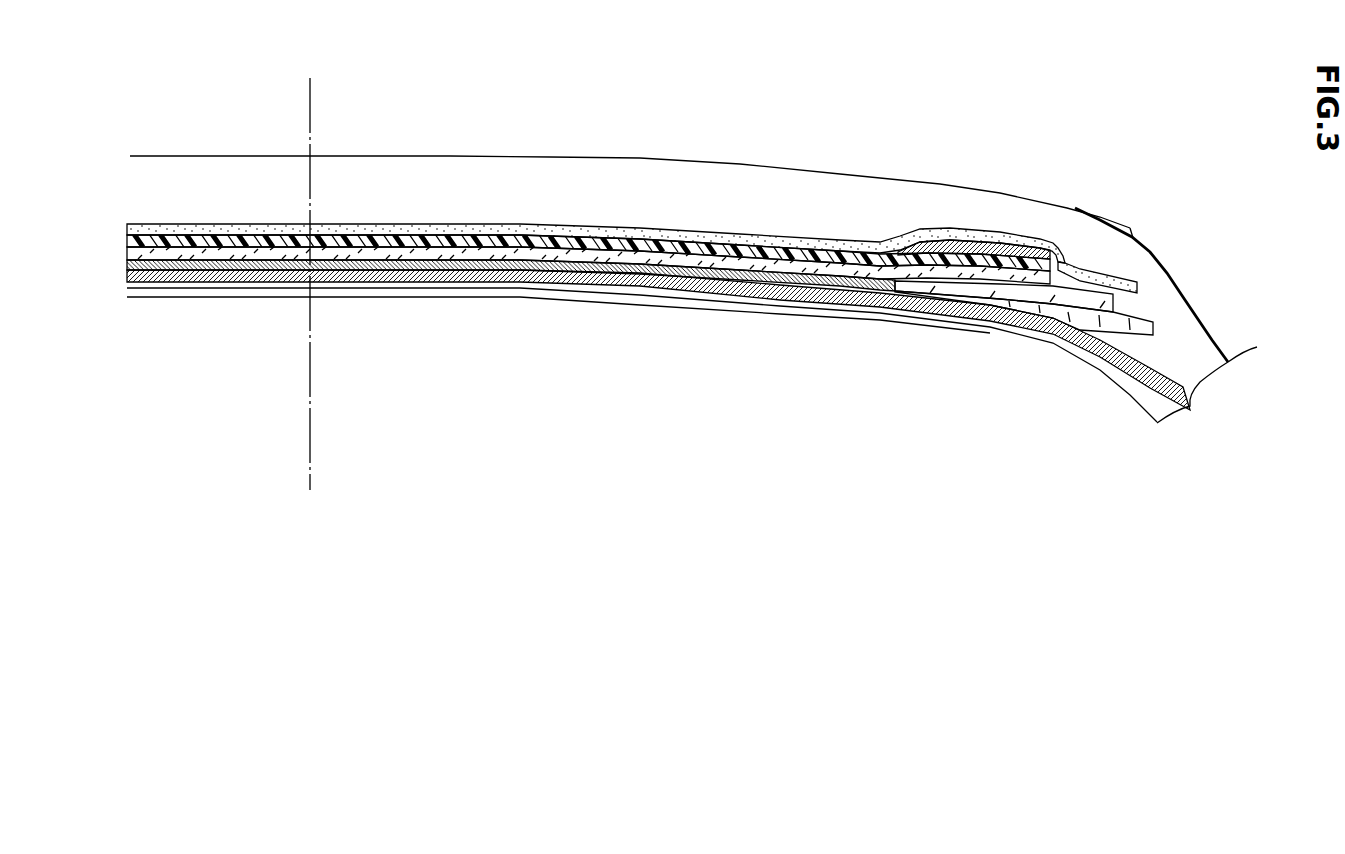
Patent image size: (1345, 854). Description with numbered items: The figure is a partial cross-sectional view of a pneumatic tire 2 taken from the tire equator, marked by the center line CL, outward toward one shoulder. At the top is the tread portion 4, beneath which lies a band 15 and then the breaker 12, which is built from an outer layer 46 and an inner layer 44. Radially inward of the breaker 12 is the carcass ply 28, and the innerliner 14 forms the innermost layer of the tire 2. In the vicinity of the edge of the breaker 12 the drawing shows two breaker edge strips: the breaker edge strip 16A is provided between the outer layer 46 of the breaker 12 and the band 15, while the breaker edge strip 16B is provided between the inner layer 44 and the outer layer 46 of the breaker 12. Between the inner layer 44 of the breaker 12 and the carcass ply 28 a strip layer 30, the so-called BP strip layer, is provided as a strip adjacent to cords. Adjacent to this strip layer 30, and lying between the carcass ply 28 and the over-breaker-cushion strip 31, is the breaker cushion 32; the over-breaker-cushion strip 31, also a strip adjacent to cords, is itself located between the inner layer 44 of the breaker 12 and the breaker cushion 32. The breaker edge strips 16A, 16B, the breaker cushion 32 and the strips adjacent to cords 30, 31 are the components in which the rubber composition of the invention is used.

The pneumatic tire 2 is at (1235, 147).
The tread portion 4 is at (521, 145).
The breaker 12 is at (588, 172).
The innerliner 14 is at (980, 322).
The band 15 is at (714, 233).
The breaker edge strip 16A is at (998, 250).
The breaker edge strip 16B is at (1066, 272).
The carcass ply 28 is at (830, 284).
The strip layer between breaker and ply 30 is at (794, 276).
The over-breaker-cushion strip 31 is at (1140, 307).
The breaker cushion 32 is at (1175, 363).
The inner layer 44 is at (873, 268).
The outer layer 46 is at (851, 252).
The tire equator center line CL is at (312, 102).